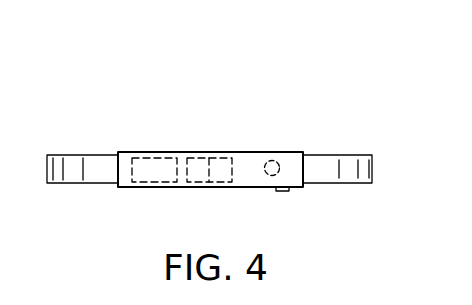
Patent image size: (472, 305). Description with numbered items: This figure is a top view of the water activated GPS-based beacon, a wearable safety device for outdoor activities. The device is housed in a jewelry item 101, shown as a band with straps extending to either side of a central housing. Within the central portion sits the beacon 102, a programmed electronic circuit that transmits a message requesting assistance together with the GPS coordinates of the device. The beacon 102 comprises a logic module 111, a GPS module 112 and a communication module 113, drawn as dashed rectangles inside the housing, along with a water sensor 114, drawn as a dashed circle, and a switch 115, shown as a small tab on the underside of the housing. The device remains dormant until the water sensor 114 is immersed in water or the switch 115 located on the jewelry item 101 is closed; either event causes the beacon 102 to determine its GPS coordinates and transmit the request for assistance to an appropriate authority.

The jewelry item 101 is at (352, 166).
The beacon 102 is at (258, 152).
The logic module 111 is at (150, 165).
The GPS module 112 is at (222, 163).
The communication module 113 is at (202, 163).
The water sensor 114 is at (274, 166).
The switch 115 is at (283, 191).